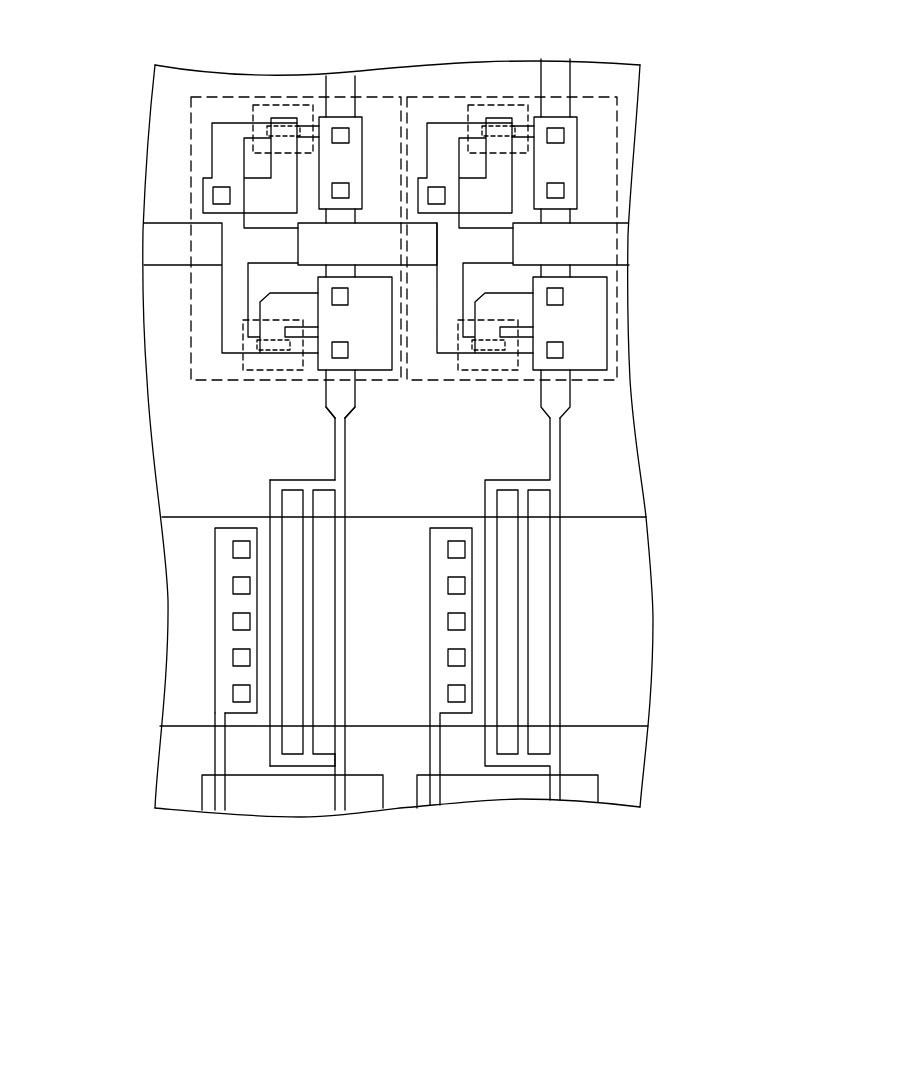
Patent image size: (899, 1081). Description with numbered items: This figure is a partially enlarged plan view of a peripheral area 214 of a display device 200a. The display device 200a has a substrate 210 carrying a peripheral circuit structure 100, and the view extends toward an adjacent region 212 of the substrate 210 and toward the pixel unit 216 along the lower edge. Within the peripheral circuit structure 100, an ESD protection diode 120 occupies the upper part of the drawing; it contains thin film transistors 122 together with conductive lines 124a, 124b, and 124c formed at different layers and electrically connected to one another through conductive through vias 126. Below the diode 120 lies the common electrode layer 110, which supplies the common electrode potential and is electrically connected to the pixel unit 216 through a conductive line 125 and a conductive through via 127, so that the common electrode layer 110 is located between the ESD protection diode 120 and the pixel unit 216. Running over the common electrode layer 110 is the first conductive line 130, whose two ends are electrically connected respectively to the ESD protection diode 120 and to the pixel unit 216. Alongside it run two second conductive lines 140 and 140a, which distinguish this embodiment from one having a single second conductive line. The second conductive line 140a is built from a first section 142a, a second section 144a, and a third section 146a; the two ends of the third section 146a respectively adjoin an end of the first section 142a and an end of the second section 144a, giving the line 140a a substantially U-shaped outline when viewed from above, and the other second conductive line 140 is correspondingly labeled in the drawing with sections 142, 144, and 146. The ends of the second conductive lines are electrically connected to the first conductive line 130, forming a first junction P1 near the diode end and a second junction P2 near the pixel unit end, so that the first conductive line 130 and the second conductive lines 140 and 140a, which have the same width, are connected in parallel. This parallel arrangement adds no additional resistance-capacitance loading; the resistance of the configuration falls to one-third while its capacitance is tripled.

The display device 200a is at (78, 40).
The substrate 210 is at (165, 132).
The peripheral area 212 is at (628, 753).
The peripheral area 214 is at (612, 434).
The pixel unit 216 is at (242, 805).
The peripheral circuit structure 100 is at (793, 137).
The common electrode layer 110 is at (178, 553).
The ESD protection diode 120 is at (212, 380).
The thin film transistor 122 is at (252, 117).
The conductive line 124a is at (220, 162).
The conductive line 124b is at (263, 205).
The conductive line 124c is at (315, 293).
The conductive line 125 is at (220, 750).
The conductive through via 126 is at (205, 198).
The conductive through via 127 is at (237, 590).
The first conductive line 130 is at (340, 620).
The second conductive line 140 is at (727, 203).
The second conductive line 140a is at (713, 307).
The gate electrode of first transistor 142 is at (327, 487).
The source electrode of first transistor 144 is at (325, 758).
The drain electrode of first transistor 146 is at (310, 688).
The first section 142a is at (293, 487).
The second section 144a is at (293, 758).
The third section 146a is at (277, 647).
The first junction P1 is at (350, 482).
The second junction P2 is at (346, 759).